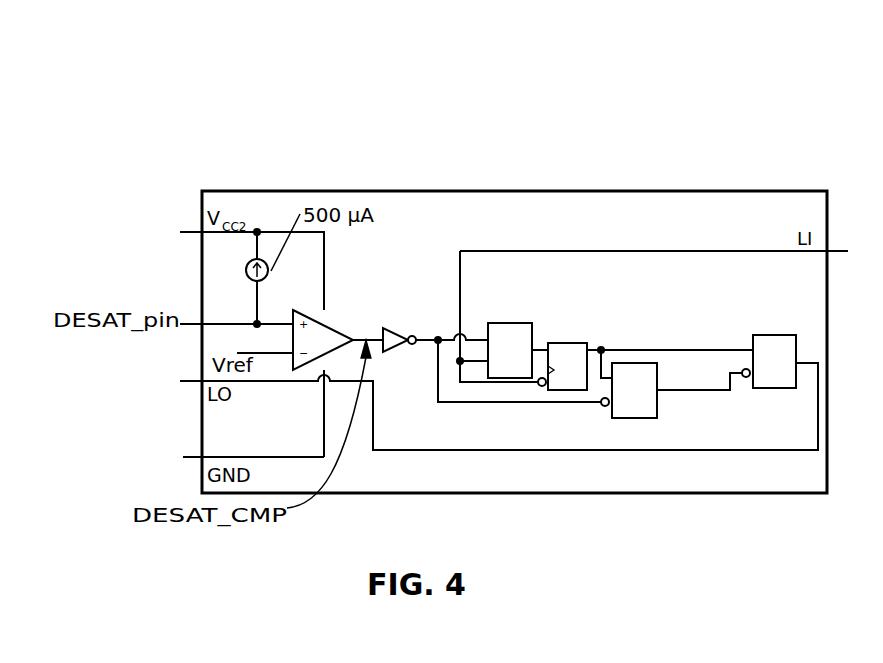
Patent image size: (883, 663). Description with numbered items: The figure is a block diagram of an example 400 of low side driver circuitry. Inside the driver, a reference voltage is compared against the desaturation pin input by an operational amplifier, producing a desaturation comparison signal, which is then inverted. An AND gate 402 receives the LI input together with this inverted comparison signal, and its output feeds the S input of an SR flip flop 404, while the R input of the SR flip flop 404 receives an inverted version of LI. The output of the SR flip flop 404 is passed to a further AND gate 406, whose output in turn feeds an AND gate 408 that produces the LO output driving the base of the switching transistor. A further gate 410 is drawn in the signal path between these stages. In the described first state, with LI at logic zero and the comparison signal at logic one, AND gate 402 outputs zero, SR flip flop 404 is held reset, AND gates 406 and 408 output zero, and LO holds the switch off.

The low side driver circuitry example 400 is at (590, 191).
The AND gate 402 is at (518, 336).
The SR flip flop 404 is at (566, 352).
The AND gate 406 is at (670, 338).
The AND gate 408 is at (773, 348).
The AND gate 410 is at (681, 388).